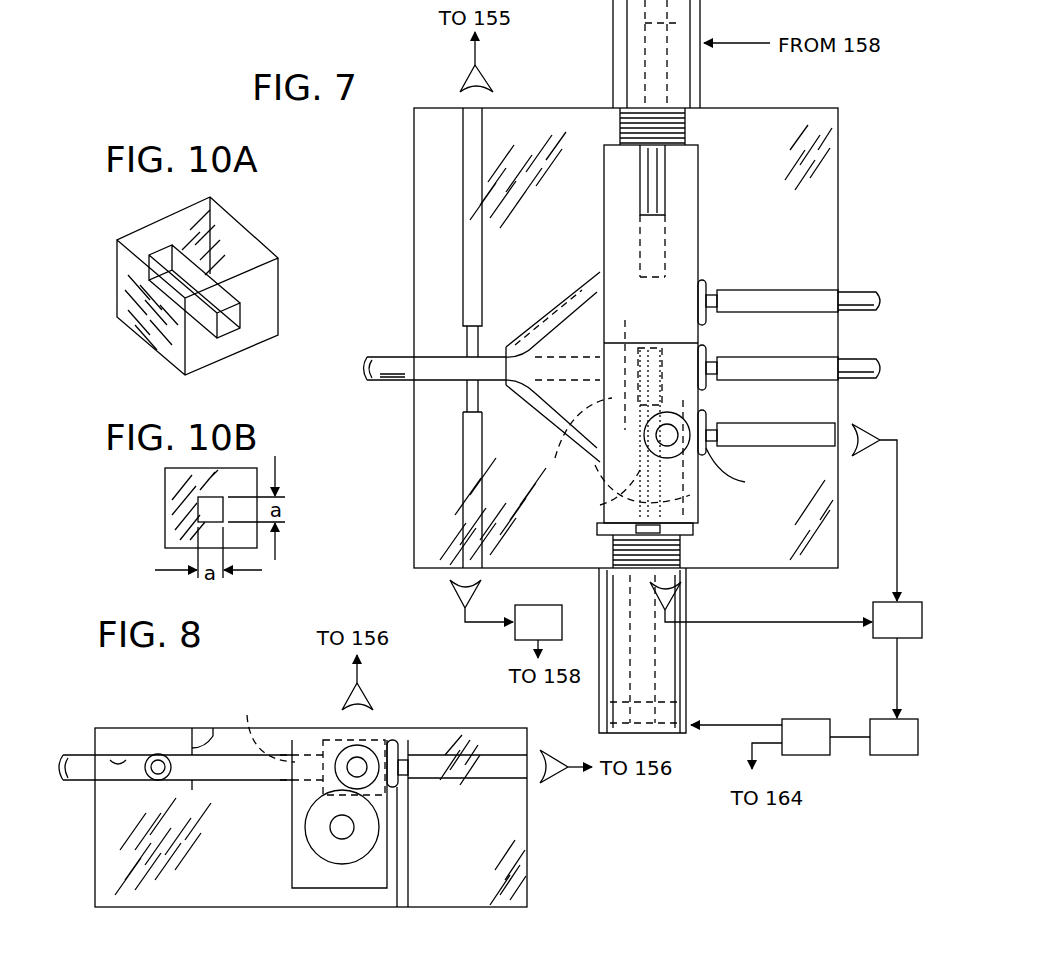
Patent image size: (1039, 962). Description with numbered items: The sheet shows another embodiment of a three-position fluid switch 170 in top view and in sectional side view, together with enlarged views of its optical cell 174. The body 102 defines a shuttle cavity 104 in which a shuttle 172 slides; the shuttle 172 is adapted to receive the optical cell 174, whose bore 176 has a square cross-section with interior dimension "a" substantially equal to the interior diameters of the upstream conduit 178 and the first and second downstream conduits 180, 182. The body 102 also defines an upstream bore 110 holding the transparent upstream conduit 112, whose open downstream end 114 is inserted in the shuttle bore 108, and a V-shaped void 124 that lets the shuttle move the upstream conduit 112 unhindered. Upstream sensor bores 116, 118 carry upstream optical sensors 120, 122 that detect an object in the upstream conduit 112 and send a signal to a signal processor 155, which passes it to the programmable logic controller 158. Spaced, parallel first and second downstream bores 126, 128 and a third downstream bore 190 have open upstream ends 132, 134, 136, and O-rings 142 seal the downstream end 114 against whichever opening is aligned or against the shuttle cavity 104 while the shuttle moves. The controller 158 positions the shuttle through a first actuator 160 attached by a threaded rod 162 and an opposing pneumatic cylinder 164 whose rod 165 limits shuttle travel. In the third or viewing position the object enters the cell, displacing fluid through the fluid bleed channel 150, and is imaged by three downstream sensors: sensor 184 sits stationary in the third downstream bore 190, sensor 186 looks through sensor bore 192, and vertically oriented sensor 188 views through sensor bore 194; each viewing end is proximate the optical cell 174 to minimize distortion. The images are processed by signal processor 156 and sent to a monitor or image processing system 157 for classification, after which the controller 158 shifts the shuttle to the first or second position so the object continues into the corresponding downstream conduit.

In FIG. 7, the body 102 is at (818, 207).
In FIG. 8, the body 102 is at (172, 907).
In FIG. 7, the shuttle cavity 104 is at (606, 232).
In FIG. 8, the shuttle cavity 104 is at (345, 888).
In FIG. 7, the shuttle bore 108 is at (569, 447).
In FIG. 8, the shuttle bore 108 is at (260, 724).
In FIG. 7, the upstream bore 110 is at (402, 380).
In FIG. 8, the upstream bore 110 is at (118, 762).
In FIG. 8, the upstream conduit 112 is at (84, 755).
In FIG. 7, the open downstream end 114 is at (700, 404).
In FIG. 8, the open downstream end 114 is at (390, 800).
In FIG. 7, the upstream sensor bore 116 is at (474, 165).
In FIG. 7, the upstream sensor bore 118 is at (468, 483).
In FIG. 8, the upstream sensor bore 118 is at (161, 757).
In FIG. 7, the upstream optical sensor 120 is at (464, 84).
In FIG. 7, the upstream optical sensor 122 is at (452, 595).
In FIG. 7, the V-shaped void 124 is at (538, 332).
In FIG. 8, the V-shaped void 124 is at (213, 733).
In FIG. 7, the first downstream bore 126 is at (795, 298).
In FIG. 7, the second downstream bore 128 is at (797, 362).
In FIG. 7, the open upstream end of first downstream bore 132 is at (712, 288).
In FIG. 7, the open upstream end of second downstream bore 134 is at (722, 365).
In FIG. 7, the open upstream end of third downstream bore 136 is at (745, 482).
In FIG. 8, the open upstream end of third downstream bore 136 is at (398, 770).
In FIG. 7, the O-ring 142 is at (712, 278).
In FIG. 8, the O-ring 142 is at (397, 740).
In FIG. 7, the fluid bleed channel 150 is at (712, 437).
In FIG. 8, the fluid bleed channel 150 is at (400, 907).
In FIG. 7, the signal processor 155 is at (535, 605).
In FIG. 7, the signal processor 156 is at (873, 632).
In FIG. 7, the monitor / image processing system 157 is at (890, 719).
In FIG. 7, the programmable logic controller 158 is at (800, 719).
In FIG. 7, the first actuator 160 is at (690, 703).
In FIG. 7, the threaded rod 162 is at (600, 506).
In FIG. 7, the second pneumatic cylinder 164 is at (612, 45).
In FIG. 7, the rod 165 is at (660, 182).
In FIG. 7, the three-position switch 170 is at (867, 139).
In FIG. 8, the three-position switch 170 is at (550, 866).
In FIG. 7, the shuttle 172 is at (690, 340).
In FIG. 8, the shuttle 172 is at (292, 860).
In FIG. 7, the optical cell 174 is at (632, 347).
In FIG. 8, the optical cell 174 is at (306, 728).
In FIG. 10A, the optical cell 174 is at (268, 248).
In FIG. 10B, the optical cell 174 is at (165, 472).
In FIG. 10A, the optical cell bore 176 is at (228, 325).
In FIG. 10B, the optical cell bore 176 is at (210, 505).
In FIG. 7, the upstream conduit 178 is at (396, 356).
In FIG. 7, the first downstream conduit 180 is at (860, 294).
In FIG. 7, the second downstream conduit 182 is at (858, 360).
In FIG. 7, the sensor 184 is at (866, 456).
In FIG. 8, the sensor 184 is at (566, 783).
In FIG. 7, the sensor 186 is at (674, 598).
In FIG. 8, the sensor 188 is at (345, 700).
In FIG. 7, the third downstream bore 190 is at (797, 425).
In FIG. 8, the third downstream bore 190 is at (480, 768).
In FIG. 7, the sensor bore 192 is at (692, 500).
In FIG. 8, the sensor bore 192 is at (340, 780).
In FIG. 7, the sensor bore 194 is at (660, 428).
In FIG. 8, the sensor bore 194 is at (378, 714).